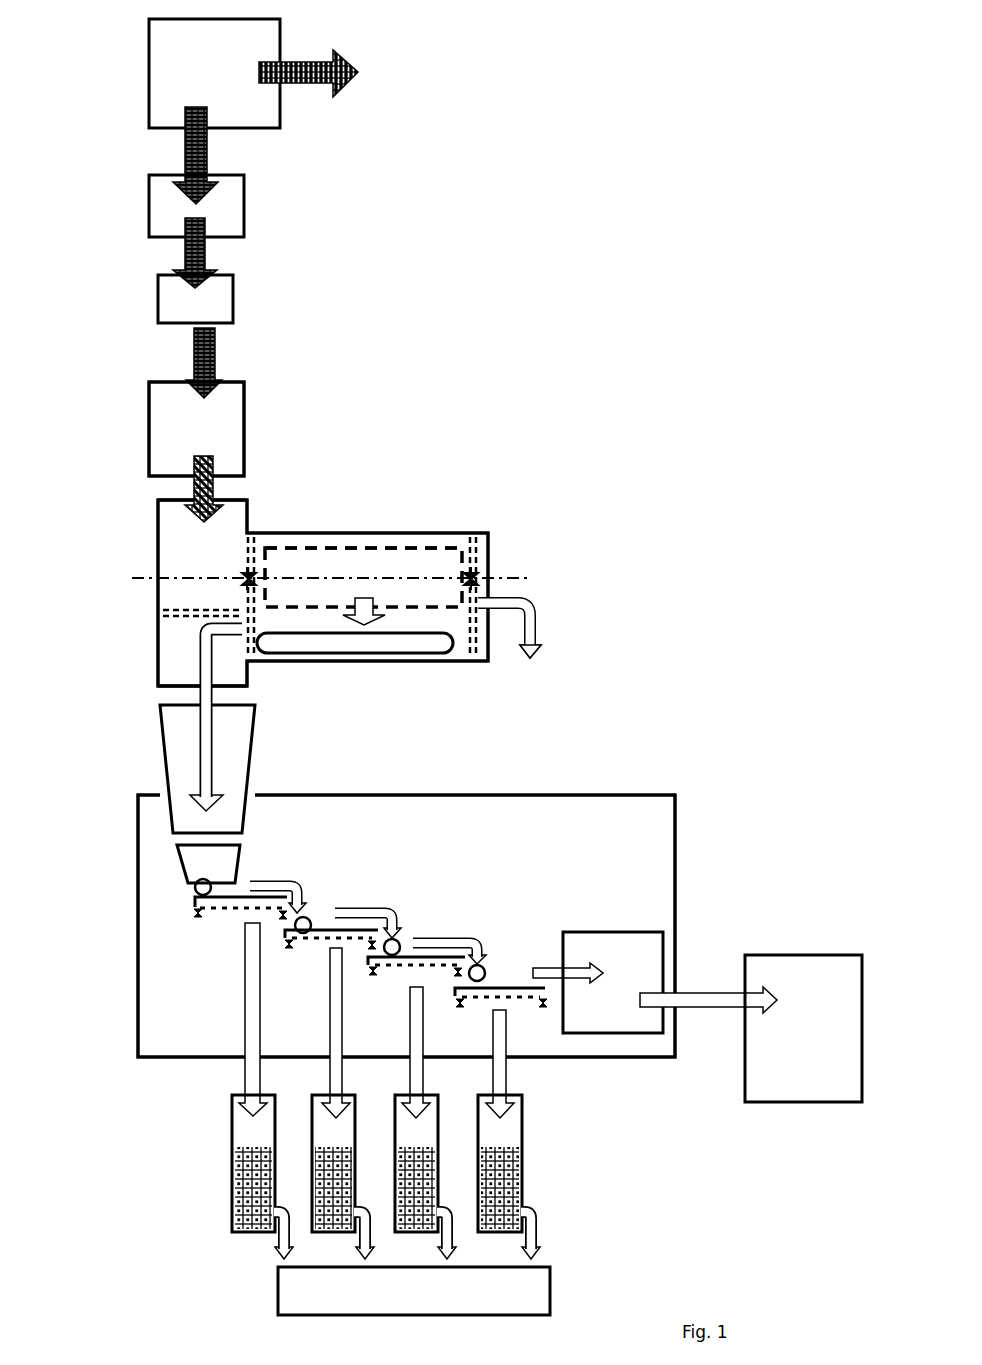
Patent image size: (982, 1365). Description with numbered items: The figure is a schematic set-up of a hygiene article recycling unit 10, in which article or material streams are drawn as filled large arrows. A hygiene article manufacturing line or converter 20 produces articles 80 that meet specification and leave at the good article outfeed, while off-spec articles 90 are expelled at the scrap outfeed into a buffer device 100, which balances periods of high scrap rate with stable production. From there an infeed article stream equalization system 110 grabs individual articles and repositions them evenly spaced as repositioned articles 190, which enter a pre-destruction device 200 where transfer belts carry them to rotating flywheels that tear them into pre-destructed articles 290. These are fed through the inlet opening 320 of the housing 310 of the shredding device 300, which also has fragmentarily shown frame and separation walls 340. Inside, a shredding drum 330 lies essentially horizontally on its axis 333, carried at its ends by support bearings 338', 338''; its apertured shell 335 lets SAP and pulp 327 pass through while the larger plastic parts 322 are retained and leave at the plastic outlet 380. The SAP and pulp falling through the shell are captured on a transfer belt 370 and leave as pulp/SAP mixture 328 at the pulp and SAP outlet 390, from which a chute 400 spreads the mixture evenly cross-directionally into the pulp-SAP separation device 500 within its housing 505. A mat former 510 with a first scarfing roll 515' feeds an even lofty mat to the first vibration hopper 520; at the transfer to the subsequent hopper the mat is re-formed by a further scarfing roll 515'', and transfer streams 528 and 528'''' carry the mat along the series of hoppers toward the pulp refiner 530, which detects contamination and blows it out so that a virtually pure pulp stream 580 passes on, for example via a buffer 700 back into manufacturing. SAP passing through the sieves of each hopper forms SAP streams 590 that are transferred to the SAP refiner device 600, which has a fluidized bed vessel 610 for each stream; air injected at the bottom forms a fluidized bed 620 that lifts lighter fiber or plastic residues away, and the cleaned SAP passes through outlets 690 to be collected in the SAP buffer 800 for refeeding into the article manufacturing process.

The processing system 10 is at (472, 317).
The converter 20 is at (238, 86).
The articles 80 is at (313, 78).
The articles 90 is at (197, 148).
The buffer device 100 is at (244, 206).
The infeed article stream equalization system 110 is at (224, 298).
The repositioned articles 190 is at (213, 360).
The pre-destruction device 200 is at (215, 422).
The pre-destructed articles 290 is at (217, 488).
The shredding device 300 is at (315, 499).
The housing 310 is at (155, 548).
The inlet opening 320 is at (180, 500).
The plastic parts 322 is at (515, 618).
The SAP and pulp 327 is at (368, 622).
The pulp/SAP mixture 328 is at (205, 665).
The shredding drum 330 is at (425, 545).
The axis 333 is at (509, 577).
The apertured shell 335 is at (380, 545).
The support bearing 338' is at (169, 567).
The support bearing 338'' is at (459, 633).
The frame and separation walls 340 is at (243, 600).
The transfer belt 370 is at (345, 648).
The plastic outlet 380 is at (533, 630).
The pulp and SAP outlet 390 is at (180, 684).
The chute 400 is at (183, 755).
The pulp-SAP separation device 500 is at (124, 904).
The housing 505 is at (137, 985).
The mat former 510 is at (188, 870).
The first scarfing roll 515' is at (147, 875).
The scarfing roll 515'' is at (368, 847).
The vibration hopper 520 is at (215, 915).
The transfer pipe 528 is at (368, 852).
The final transfer pipe 528'''' is at (584, 853).
The pulp refiner 530 is at (629, 971).
The pulp stream 580 is at (716, 994).
The SAP stream 590 is at (252, 1047).
The SAP refiner device 600 is at (141, 1115).
The fluidized bed vessel 610 is at (229, 1202).
The fluidized bed 620 is at (251, 1187).
The drain pipe 690 is at (273, 1243).
The buffer 700 is at (776, 985).
The SAP buffer 800 is at (302, 1280).